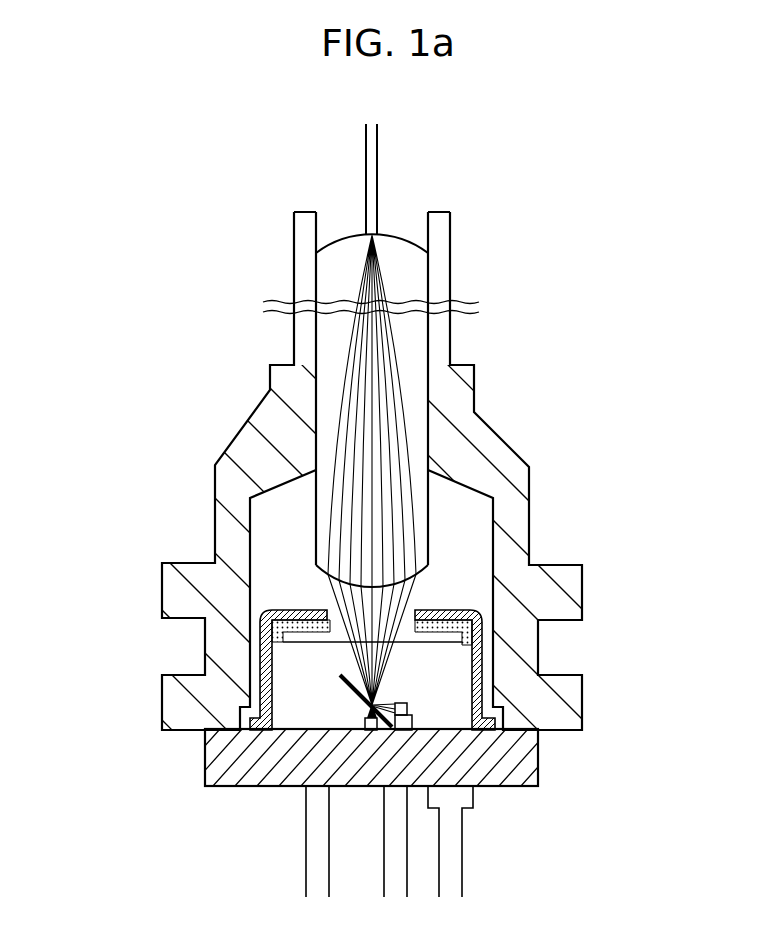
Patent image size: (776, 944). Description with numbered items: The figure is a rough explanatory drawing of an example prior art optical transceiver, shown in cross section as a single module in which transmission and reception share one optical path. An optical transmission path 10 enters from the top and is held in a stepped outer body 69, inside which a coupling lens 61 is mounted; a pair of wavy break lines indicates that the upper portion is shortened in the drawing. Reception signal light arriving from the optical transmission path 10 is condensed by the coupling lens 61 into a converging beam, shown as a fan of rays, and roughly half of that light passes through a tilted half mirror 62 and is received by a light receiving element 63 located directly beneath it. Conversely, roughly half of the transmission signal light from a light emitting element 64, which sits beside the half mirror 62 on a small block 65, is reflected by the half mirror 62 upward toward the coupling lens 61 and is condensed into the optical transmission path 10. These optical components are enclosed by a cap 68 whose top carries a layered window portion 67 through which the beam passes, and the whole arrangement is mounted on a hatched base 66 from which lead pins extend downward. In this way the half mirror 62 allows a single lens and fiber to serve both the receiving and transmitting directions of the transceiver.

The optical transmission path 10 is at (377, 188).
The coupling lens 61 is at (428, 355).
The half mirror 62 is at (340, 683).
The light receiving element 63 is at (360, 722).
The light emitting element 64 is at (407, 706).
The submount 65 is at (412, 718).
The stem base 66 is at (205, 771).
The filter window 67 is at (460, 605).
The cap 68 is at (482, 618).
The housing 69 is at (483, 422).